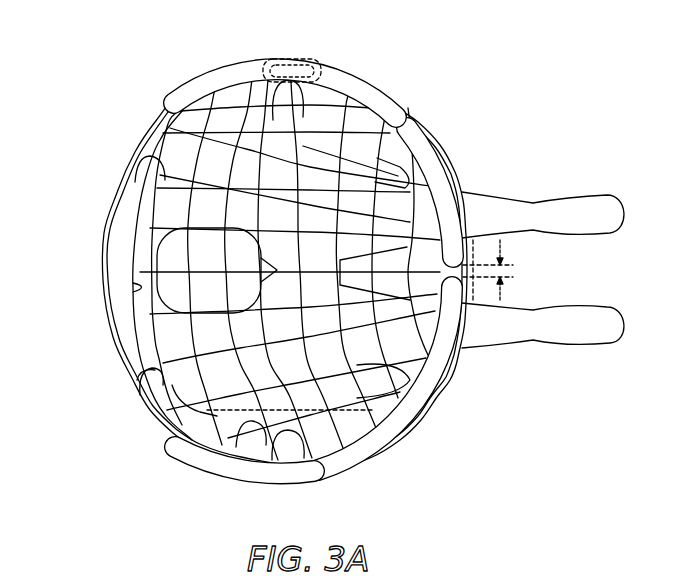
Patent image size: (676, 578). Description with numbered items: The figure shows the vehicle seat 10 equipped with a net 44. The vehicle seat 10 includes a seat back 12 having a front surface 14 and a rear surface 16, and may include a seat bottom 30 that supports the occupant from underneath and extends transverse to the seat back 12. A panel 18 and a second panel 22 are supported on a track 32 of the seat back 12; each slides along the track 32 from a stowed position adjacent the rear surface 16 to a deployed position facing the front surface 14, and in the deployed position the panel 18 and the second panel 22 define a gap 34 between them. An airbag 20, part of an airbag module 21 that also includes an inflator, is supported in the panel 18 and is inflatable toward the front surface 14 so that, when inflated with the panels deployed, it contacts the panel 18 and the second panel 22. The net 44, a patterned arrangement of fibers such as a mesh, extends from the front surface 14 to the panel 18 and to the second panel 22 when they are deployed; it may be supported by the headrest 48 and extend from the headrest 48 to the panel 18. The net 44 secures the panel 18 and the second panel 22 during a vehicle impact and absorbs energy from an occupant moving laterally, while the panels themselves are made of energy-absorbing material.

The vehicle seat 10 is at (80, 60).
The seat back 12 is at (257, 97).
The front surface 14 is at (150, 287).
The rear surface 16 is at (117, 193).
The panel 18 is at (367, 93).
The airbag 20 is at (320, 58).
The airbag module 21 is at (287, 57).
The second panel 22 is at (370, 443).
The seat bottom 30 is at (463, 180).
The track 32 is at (133, 380).
The gap 34 is at (500, 290).
The net 44 is at (167, 130).
The headrest 48 is at (123, 233).